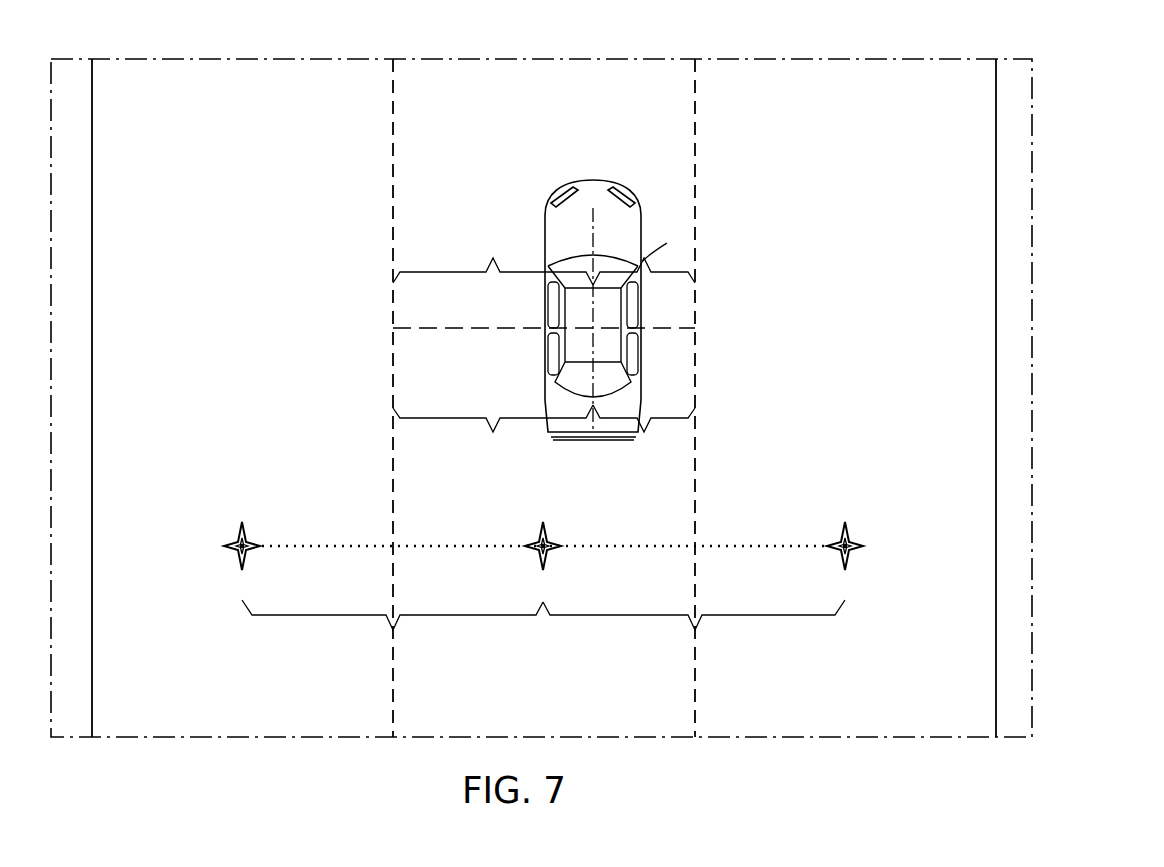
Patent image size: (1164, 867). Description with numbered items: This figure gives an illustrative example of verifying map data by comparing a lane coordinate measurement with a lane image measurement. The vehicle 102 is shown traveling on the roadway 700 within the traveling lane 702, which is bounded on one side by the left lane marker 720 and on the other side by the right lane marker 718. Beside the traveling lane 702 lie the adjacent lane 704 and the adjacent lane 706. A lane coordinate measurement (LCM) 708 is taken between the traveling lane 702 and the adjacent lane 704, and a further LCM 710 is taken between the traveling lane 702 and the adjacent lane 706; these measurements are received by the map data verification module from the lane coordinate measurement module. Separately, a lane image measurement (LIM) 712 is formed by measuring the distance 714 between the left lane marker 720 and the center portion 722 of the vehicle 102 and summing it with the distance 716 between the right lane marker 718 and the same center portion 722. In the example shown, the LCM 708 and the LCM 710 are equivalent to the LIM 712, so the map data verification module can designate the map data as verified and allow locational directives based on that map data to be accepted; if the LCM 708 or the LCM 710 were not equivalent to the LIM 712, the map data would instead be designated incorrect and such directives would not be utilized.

The roadway 700 is at (1024, 57).
The traveling lane 702 is at (545, 122).
The adjacent lane 704 is at (846, 122).
The adjacent lane 706 is at (243, 122).
The lane coordinate measurement (LCM) 708 is at (400, 663).
The lane coordinate measurement (LCM) 710 is at (700, 663).
The lane image measurement (LIM) 712 is at (562, 517).
The distance 714 is at (493, 347).
The distance 716 is at (642, 340).
The right lane marker 718 is at (695, 363).
The left lane marker 720 is at (393, 328).
The center portion 722 is at (592, 240).
The vehicle 102 is at (642, 210).